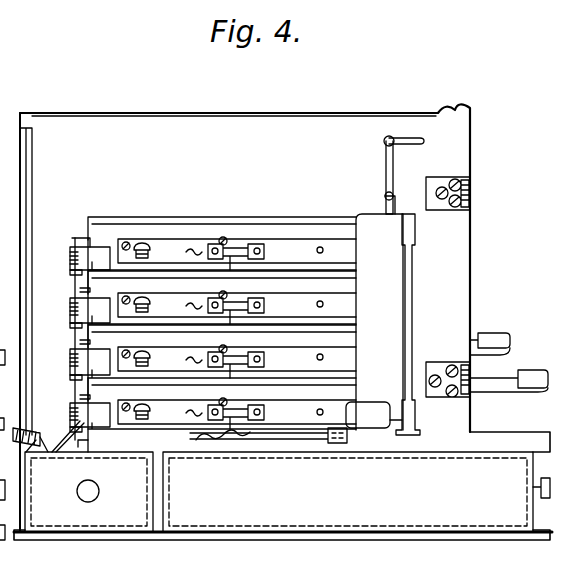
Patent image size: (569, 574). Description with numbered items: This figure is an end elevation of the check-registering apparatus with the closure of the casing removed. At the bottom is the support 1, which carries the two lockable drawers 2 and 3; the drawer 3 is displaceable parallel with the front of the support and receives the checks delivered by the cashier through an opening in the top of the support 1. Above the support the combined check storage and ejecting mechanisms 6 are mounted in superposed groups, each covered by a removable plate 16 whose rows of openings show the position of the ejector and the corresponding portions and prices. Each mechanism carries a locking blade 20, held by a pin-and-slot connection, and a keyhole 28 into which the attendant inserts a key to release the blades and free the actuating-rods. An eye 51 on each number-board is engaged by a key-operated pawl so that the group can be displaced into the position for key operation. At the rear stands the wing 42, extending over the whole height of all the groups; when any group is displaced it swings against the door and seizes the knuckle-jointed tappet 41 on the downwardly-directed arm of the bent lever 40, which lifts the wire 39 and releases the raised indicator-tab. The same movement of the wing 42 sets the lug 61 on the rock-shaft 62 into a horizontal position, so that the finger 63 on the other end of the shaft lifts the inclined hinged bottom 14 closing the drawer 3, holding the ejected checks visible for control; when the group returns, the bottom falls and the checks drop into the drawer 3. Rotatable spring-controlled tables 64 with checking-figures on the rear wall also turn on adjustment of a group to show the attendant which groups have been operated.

The support 1 is at (163, 535).
The drawer 2 is at (356, 492).
The drawer 3 is at (89, 492).
The combined check storage and ejecting mechanisms 6 is at (318, 324).
The hinged bottom 14 is at (74, 423).
The removable plate 16 is at (308, 224).
The blade 20 is at (152, 248).
The keyhole 28 is at (177, 337).
The wire 39 is at (418, 133).
The bent lever 40 is at (395, 168).
The knuckle-jointed tappet 41 is at (393, 212).
The wing 42 is at (393, 324).
The eye 51 is at (241, 252).
The lug 61 is at (374, 415).
The rock-shaft 62 is at (280, 440).
The finger 63 is at (88, 450).
The rotatable spring-controlled tables 64 is at (108, 246).